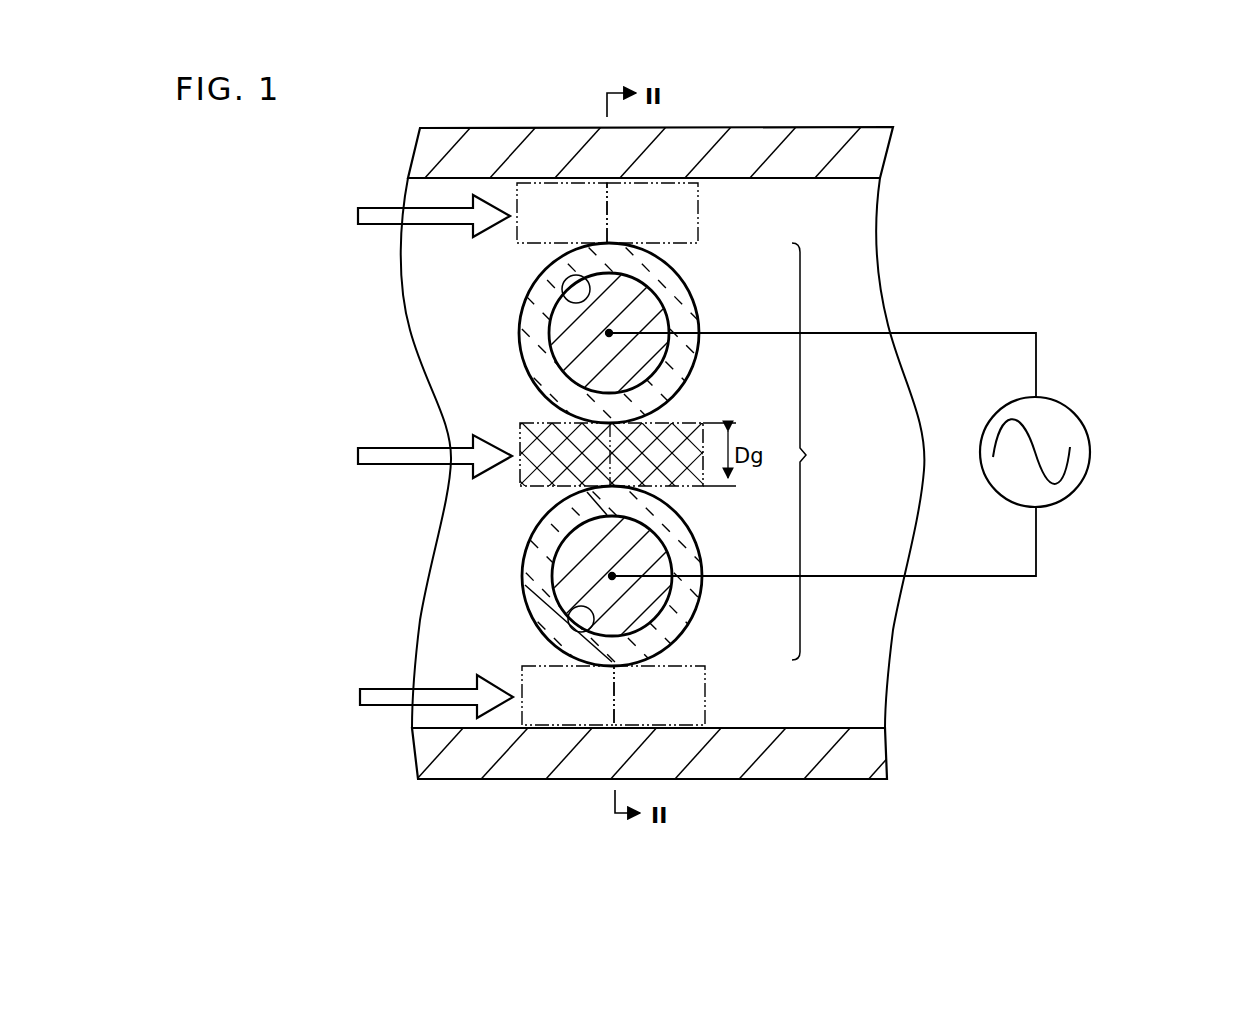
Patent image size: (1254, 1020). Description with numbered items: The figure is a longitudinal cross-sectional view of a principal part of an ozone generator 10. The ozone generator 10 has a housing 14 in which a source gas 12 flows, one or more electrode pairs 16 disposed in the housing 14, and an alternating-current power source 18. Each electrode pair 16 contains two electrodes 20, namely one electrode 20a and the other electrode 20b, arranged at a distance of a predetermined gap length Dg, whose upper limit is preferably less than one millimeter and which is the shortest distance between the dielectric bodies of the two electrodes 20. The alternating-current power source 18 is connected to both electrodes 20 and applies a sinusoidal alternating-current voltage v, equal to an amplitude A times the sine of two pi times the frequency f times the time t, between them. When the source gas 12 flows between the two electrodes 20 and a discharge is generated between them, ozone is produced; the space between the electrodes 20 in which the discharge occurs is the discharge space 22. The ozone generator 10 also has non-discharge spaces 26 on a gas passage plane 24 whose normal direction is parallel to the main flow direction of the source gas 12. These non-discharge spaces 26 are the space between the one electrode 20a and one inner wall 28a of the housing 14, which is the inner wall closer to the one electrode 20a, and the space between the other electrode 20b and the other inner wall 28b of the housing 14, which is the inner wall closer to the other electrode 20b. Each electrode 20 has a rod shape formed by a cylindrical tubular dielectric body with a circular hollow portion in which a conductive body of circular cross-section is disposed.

The ozone generator 10 is at (383, 108).
The source gas 12 is at (377, 205).
The housing 14 is at (752, 132).
The electrode pair 16 is at (816, 451).
The alternating-current power source 18 is at (1070, 405).
The electrode 20 is at (597, 450).
The one electrode 20a is at (662, 450).
The other electrode 20b is at (586, 450).
The discharge space 22 is at (527, 422).
The gas passage plane 24 is at (607, 213).
The non-discharge space 26 is at (698, 210).
The one inner wall 28a is at (848, 180).
The other inner wall 28b is at (850, 727).